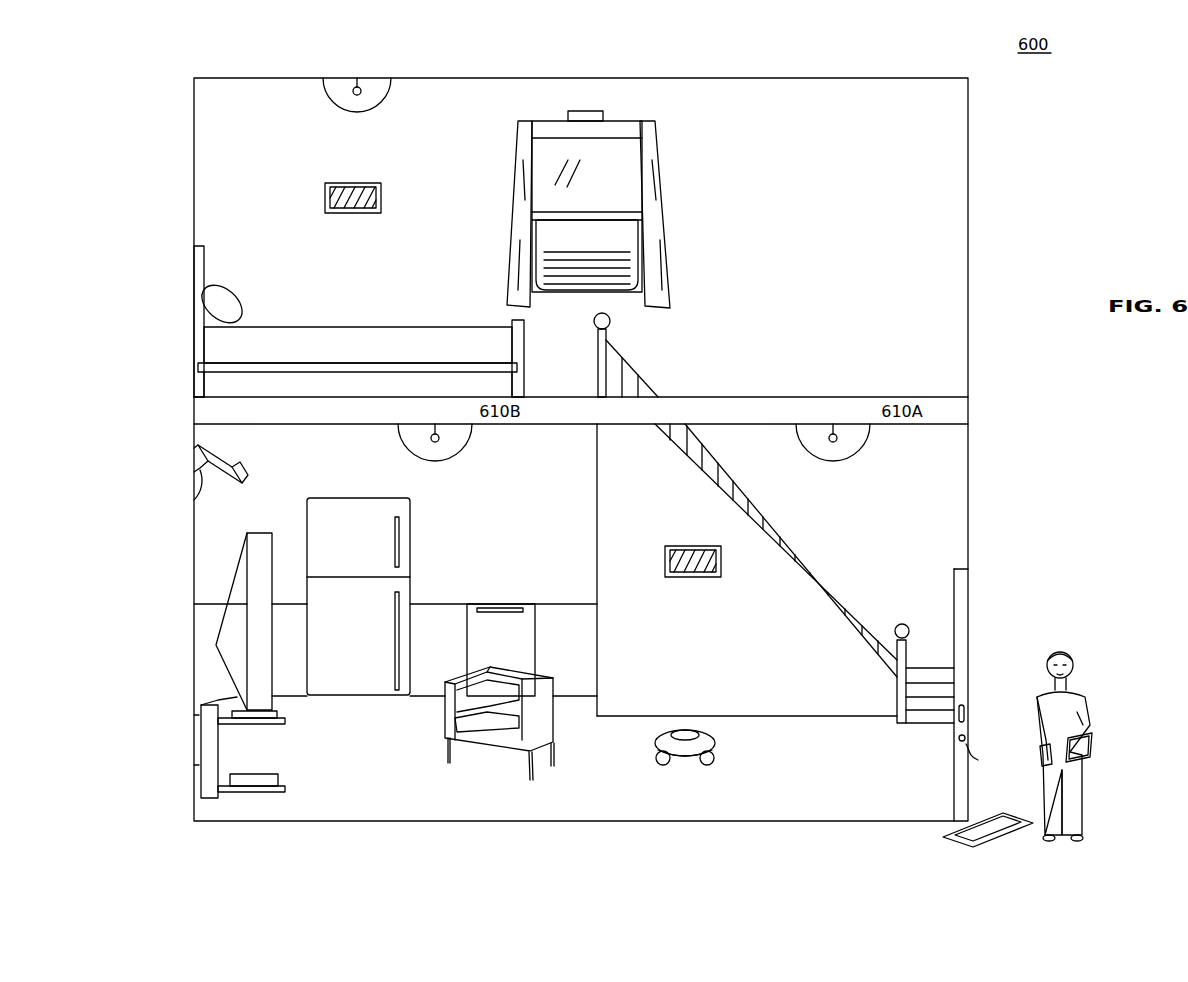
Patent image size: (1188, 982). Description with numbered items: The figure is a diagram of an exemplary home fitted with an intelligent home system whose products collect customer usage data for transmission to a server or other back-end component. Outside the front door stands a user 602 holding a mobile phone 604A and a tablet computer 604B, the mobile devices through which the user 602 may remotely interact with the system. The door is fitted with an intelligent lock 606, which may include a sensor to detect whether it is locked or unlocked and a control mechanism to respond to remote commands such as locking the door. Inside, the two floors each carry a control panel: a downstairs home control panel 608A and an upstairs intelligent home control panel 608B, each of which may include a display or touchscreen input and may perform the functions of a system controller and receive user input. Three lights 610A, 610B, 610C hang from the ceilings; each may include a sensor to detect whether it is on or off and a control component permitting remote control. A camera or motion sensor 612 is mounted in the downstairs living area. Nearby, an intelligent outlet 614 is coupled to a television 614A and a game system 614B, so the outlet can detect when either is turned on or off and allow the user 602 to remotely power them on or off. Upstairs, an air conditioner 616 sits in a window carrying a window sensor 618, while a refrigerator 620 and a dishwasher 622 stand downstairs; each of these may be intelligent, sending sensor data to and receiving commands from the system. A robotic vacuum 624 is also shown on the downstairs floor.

The user 602 is at (1049, 692).
The mobile phone 604A is at (1037, 755).
The tablet computer 604B is at (1090, 752).
The intelligent lock 606 is at (982, 695).
The downstairs home control panel 608A is at (692, 578).
The upstairs intelligent home control panel 608B is at (346, 214).
The light 610A is at (833, 442).
The light 610B is at (435, 442).
The light 610C is at (334, 94).
The camera or motion sensor 612 is at (222, 449).
The intelligent outlet 614 is at (198, 781).
The television 614A is at (234, 578).
The game system 614B is at (258, 779).
The air conditioner 616 is at (556, 236).
The window sensor 618 is at (588, 110).
The refrigerator 620 is at (328, 497).
The dishwasher 622 is at (538, 628).
The robotic vacuum 624 is at (706, 741).